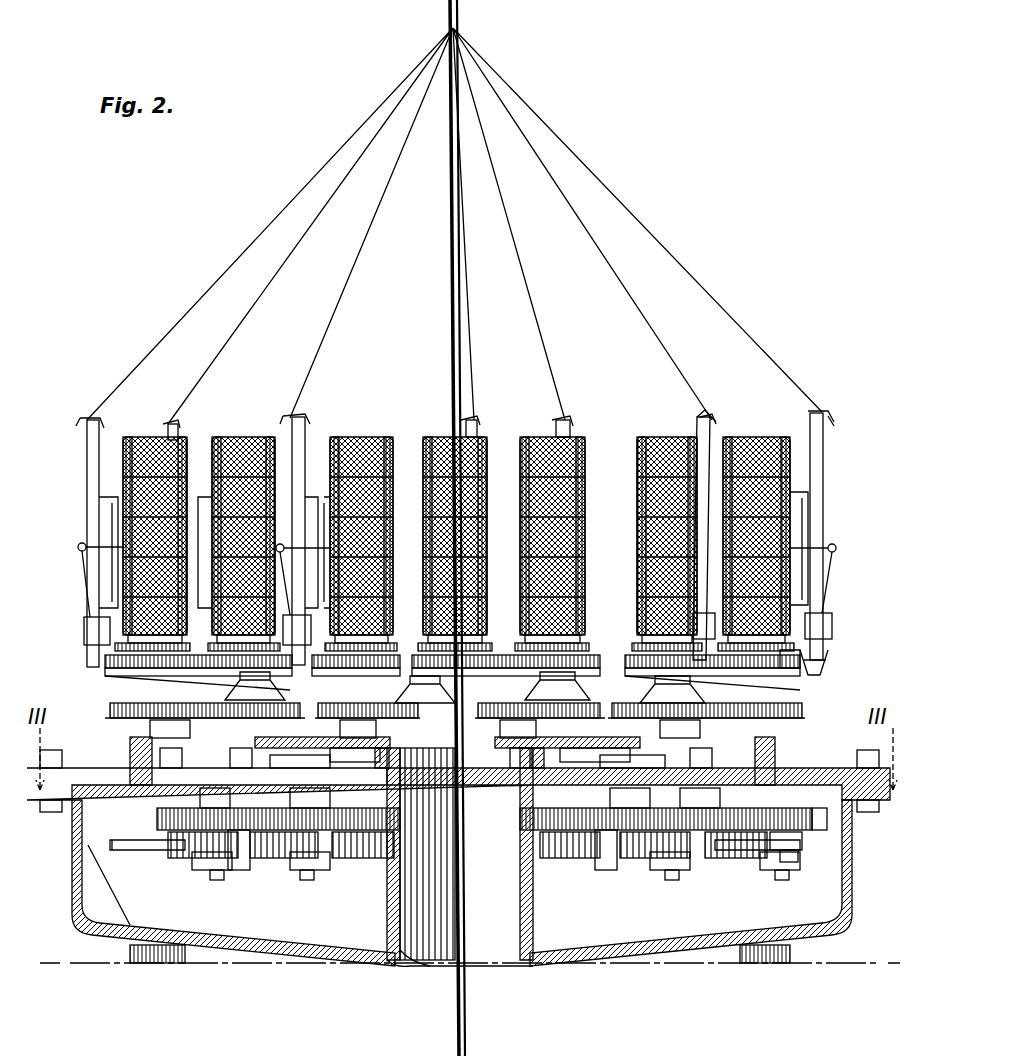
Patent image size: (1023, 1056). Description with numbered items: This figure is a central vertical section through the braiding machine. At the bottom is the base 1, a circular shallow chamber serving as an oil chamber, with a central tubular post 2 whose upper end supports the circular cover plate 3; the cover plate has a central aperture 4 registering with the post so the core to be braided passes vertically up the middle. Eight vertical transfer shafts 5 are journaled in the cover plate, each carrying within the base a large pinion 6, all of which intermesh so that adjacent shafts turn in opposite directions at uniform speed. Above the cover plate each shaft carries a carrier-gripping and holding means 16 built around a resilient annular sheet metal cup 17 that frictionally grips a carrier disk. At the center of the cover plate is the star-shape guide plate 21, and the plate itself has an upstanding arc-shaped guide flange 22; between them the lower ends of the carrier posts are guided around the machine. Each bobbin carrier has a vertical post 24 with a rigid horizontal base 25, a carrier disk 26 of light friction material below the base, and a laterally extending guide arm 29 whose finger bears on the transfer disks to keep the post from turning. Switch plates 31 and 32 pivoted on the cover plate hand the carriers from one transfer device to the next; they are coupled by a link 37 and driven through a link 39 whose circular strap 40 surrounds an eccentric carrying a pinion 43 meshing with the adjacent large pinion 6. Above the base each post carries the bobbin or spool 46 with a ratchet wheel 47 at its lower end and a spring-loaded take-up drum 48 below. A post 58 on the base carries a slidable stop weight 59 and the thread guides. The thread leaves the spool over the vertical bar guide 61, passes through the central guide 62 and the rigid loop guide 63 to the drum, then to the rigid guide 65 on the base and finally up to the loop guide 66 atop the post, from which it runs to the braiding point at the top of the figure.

The base 1 is at (72, 876).
The central tubular post 2 is at (432, 966).
The circular cover plate 3 is at (104, 768).
The central aperture 4 is at (482, 800).
The vertical transfer shaft 5 is at (230, 860).
The large pinion 6 is at (214, 870).
The carrier-gripping and holding means 16 is at (440, 688).
The annular sheet metal cup 17 is at (518, 689).
The star-shape guide plate 21 is at (330, 754).
The guide flange 22 is at (130, 742).
The vertical post 24 is at (155, 775).
The horizontal base 25 is at (630, 672).
The carrier disk 26 is at (110, 710).
The guide arm 29 is at (460, 805).
The switch plate 31 is at (443, 776).
The switch plate 32 is at (612, 750).
The link 37 is at (345, 862).
The link 39 is at (140, 850).
The circular strap 40 is at (802, 840).
The pinion 43 is at (828, 822).
The bobbin or spool 46 is at (218, 440).
The ratchet wheel 47 is at (565, 640).
The take-up drum 48 is at (580, 648).
The post 58 is at (87, 466).
The slidable stop weight 59 is at (84, 630).
The vertical bar guide 61 is at (118, 522).
The central guide 62 is at (80, 552).
The rigid loop guide 63 is at (828, 662).
The rigid guide 65 is at (810, 652).
The loop guide 66 is at (163, 422).